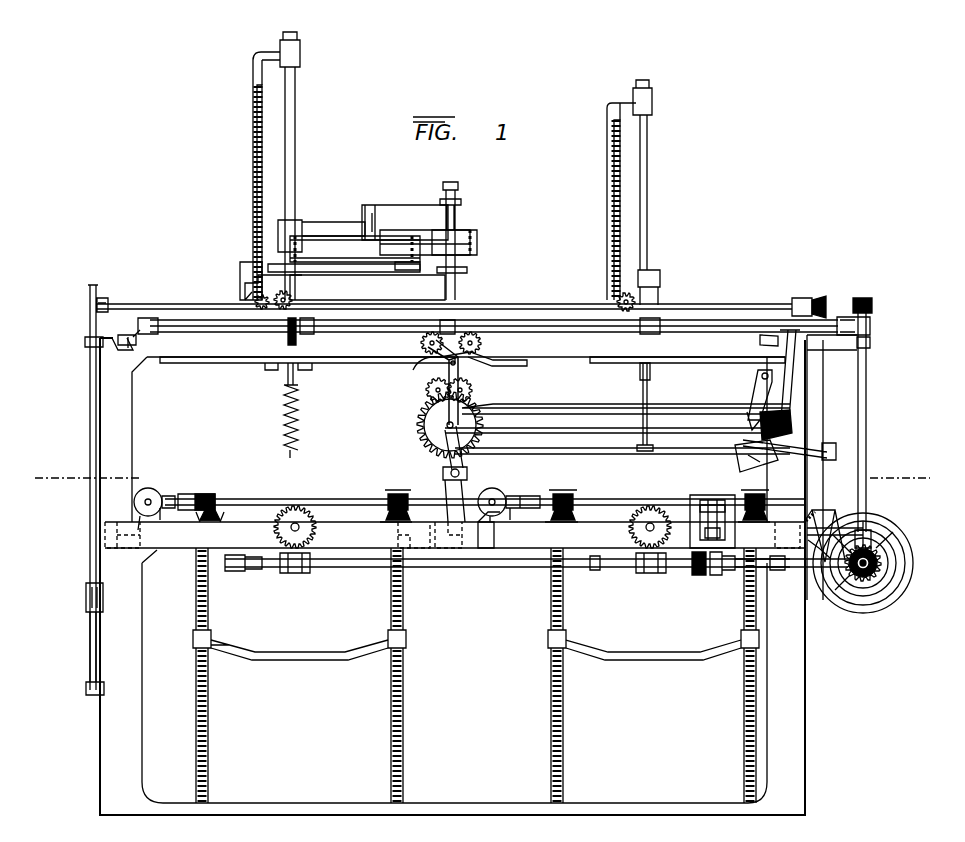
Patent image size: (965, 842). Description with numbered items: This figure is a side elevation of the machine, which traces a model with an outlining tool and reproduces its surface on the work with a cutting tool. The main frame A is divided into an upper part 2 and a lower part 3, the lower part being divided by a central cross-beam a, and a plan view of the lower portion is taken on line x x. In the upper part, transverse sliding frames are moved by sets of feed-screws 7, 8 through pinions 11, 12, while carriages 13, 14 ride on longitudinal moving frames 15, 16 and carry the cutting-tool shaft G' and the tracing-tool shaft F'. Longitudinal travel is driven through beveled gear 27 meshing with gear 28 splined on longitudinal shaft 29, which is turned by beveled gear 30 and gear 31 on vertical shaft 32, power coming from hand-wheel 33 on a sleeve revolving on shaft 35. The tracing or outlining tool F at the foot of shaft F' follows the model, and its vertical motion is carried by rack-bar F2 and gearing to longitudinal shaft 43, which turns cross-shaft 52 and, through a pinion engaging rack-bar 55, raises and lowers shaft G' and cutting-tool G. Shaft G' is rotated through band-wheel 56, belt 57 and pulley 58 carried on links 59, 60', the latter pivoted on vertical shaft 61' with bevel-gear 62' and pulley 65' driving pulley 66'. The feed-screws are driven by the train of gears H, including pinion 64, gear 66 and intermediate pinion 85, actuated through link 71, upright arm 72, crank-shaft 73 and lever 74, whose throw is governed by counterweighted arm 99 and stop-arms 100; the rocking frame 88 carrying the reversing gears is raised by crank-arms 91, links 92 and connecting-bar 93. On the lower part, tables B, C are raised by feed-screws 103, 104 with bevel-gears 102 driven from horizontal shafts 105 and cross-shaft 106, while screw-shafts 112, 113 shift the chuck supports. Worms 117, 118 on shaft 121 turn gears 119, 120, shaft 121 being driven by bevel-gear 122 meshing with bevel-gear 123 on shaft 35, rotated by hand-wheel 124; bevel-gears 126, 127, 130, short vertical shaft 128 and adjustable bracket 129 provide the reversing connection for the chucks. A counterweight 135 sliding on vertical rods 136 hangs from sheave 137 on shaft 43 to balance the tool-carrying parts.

The main frame A is at (445, 580).
The upper part of frame 2 is at (488, 337).
The lower part of frame 3 is at (455, 535).
The feed-screws 7 is at (421, 343).
The feed-screws 8 is at (481, 343).
The pinion 11 is at (425, 382).
The pinion 12 is at (483, 365).
The sliding table or carriage 13 is at (265, 366).
The sliding table or carriage 14 is at (687, 372).
The longitudinal moving frame 15 is at (308, 336).
The longitudinal moving frame 16 is at (659, 337).
The beveled gear 27 is at (268, 325).
The gear 28 is at (283, 337).
The longitudinal shaft 29 is at (407, 338).
The beveled gear 30 is at (872, 333).
The gear 31 is at (874, 312).
The vertical shaft 32 is at (869, 356).
The hand-wheel 33 is at (878, 556).
The shaft 35 is at (882, 566).
The longitudinal shaft 43 is at (735, 303).
The cross-shaft 52 is at (275, 300).
The rack-bar 55 is at (252, 156).
The band-wheel 56 is at (268, 268).
The belt 57 is at (355, 246).
The pulley 58 is at (420, 266).
The link 59 is at (335, 224).
The link 60' is at (369, 239).
The vertical shaft 61' is at (452, 229).
The bevel-gear 62' is at (369, 209).
The pinion 64 is at (472, 392).
The pulley 65' is at (474, 239).
The gear 66 is at (430, 425).
The pulley 66' is at (425, 232).
The link 71 is at (558, 408).
The upright arm 72 is at (758, 380).
The crank-shaft 73 is at (788, 425).
The lever 74 is at (790, 380).
The intermediate pinion 85 is at (426, 392).
The rocking frame 88 is at (558, 433).
The crank-arms 91 is at (442, 477).
The links 92 is at (445, 460).
The connecting-bar 93 is at (560, 454).
The counterweighted arm 99 is at (745, 468).
The stop-arms 100 is at (832, 452).
The bevel-gear 102 is at (213, 506).
The feed-screws 103 is at (564, 716).
The feed-screws 104 is at (210, 716).
The horizontal shafts 105 is at (485, 491).
The cross-shaft 106 is at (142, 500).
The screw-shafts 112 is at (499, 530).
The screw-shafts 113 is at (140, 534).
The worm 117 is at (652, 574).
The worm 118 is at (292, 574).
The gear 119 is at (630, 531).
The gear 120 is at (316, 532).
The shaft 121 is at (482, 568).
The bevel-gear 122 is at (845, 612).
The bevel-gear 123 is at (896, 585).
The hand-wheel 124 is at (888, 538).
The bevel-gear 126 is at (697, 577).
The bevel-gear 127 is at (735, 532).
The short vertical shaft 128 is at (705, 518).
The adjustable bracket 129 is at (730, 523).
The bevel-gear 130 is at (716, 577).
The counterweight 135 is at (86, 597).
The vertical rods 136 is at (90, 651).
The sheave 137 is at (85, 312).
The vertically-movable table B is at (653, 640).
The vertically-movable table C is at (299, 640).
The tracing or outlining tool F is at (635, 409).
The vertical shaft F' is at (651, 175).
The rack-bar F2 is at (607, 205).
The cutting-tool G is at (276, 410).
The cutting-tool shaft G' is at (299, 166).
The train of gears H is at (414, 420).
The central cross-beam a is at (450, 548).
The section line x is at (477, 477).